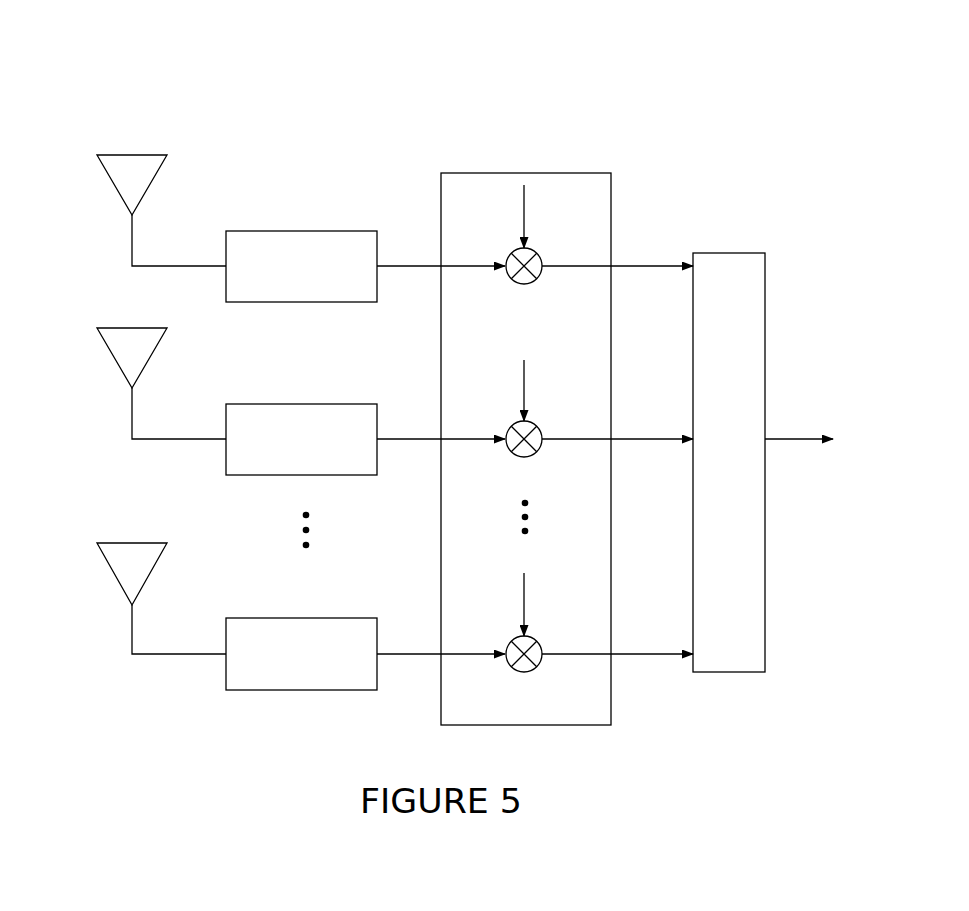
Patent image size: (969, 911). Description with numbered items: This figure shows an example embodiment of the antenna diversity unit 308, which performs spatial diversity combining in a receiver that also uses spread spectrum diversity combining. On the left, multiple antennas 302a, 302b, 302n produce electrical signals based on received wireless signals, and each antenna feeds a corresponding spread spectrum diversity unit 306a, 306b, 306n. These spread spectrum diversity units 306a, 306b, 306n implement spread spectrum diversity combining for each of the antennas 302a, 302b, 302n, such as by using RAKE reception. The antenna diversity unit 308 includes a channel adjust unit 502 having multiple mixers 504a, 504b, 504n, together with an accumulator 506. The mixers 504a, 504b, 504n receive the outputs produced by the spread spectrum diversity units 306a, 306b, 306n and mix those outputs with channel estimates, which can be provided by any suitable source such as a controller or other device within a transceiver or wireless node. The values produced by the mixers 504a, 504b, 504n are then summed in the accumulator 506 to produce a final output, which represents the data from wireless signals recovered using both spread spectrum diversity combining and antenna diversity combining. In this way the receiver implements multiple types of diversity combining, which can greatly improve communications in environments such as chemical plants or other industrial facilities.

The antenna diversity unit 308 is at (260, 47).
The antenna 302a is at (138, 150).
The antenna 302b is at (130, 324).
The antenna 302n is at (137, 542).
The spread spectrum diversity unit 306a is at (297, 228).
The spread spectrum diversity unit 306b is at (297, 402).
The spread spectrum diversity unit 306n is at (283, 616).
The channel adjust unit 502 is at (480, 172).
The mixer 504a is at (523, 287).
The mixer 504b is at (523, 460).
The mixer 504n is at (522, 675).
The accumulator 506 is at (743, 252).